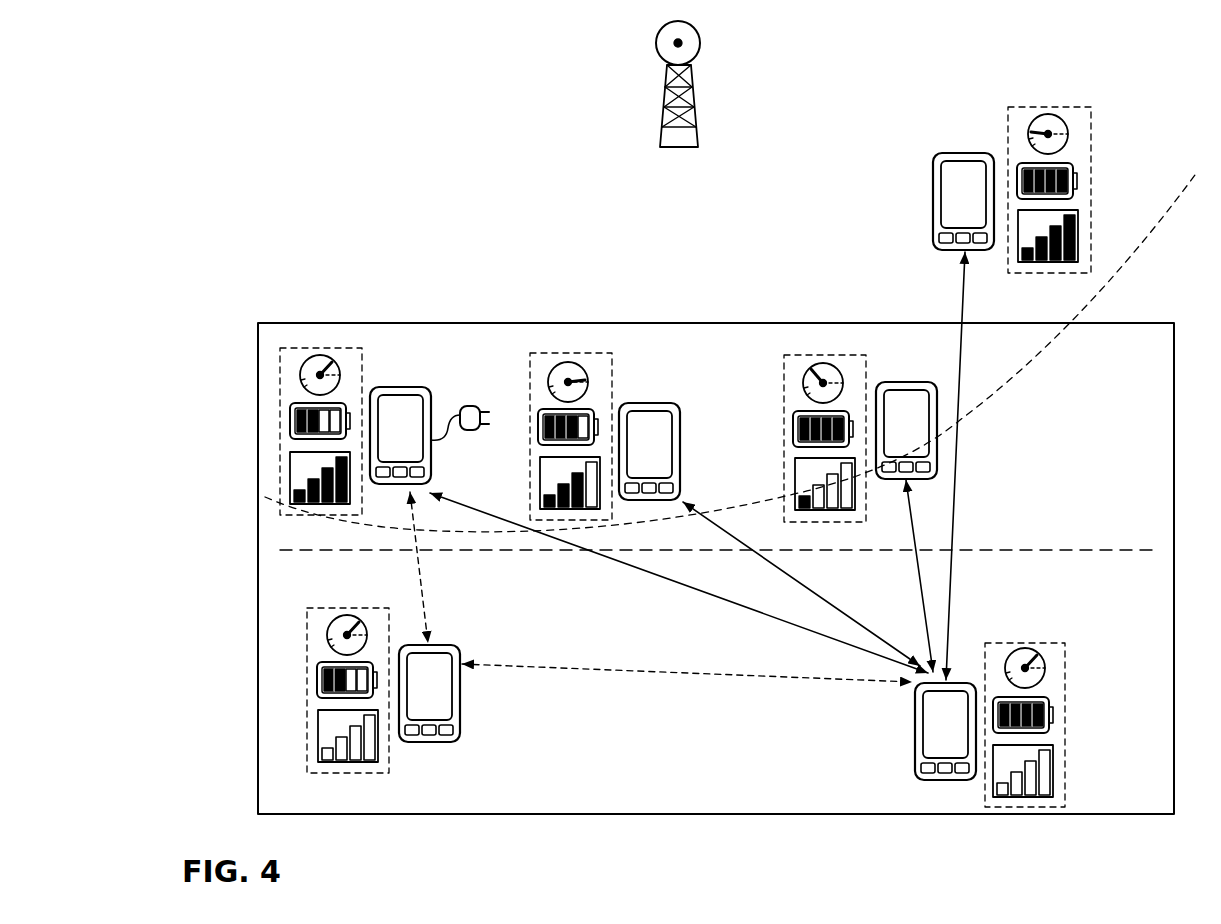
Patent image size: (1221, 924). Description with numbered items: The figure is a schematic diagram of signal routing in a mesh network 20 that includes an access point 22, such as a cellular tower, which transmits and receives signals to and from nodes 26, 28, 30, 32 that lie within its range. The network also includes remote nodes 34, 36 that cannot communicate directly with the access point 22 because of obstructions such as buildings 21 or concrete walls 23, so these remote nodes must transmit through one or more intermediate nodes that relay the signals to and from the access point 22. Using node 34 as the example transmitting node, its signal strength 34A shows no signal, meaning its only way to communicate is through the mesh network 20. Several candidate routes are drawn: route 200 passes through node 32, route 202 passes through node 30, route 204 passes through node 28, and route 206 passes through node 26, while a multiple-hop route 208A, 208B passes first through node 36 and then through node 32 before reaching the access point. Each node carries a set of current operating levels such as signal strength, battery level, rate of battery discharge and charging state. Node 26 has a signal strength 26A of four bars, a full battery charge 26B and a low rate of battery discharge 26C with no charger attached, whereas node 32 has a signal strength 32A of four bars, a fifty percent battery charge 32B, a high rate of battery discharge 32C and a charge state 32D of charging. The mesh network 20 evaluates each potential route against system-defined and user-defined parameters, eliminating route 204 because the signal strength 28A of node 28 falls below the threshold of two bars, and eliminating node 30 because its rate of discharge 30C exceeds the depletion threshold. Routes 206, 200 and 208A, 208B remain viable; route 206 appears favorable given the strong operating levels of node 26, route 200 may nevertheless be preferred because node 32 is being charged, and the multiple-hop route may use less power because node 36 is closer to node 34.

The mesh network 20 is at (450, 180).
The buildings 21 is at (467, 815).
The access point 22 is at (660, 135).
The concrete walls 23 is at (1028, 550).
The node 26 is at (955, 155).
The signal strength 26A is at (1064, 265).
The battery charge 26B is at (1080, 172).
The rate of battery discharge 26C is at (1064, 128).
The node 28 is at (898, 384).
The signal strength 28A is at (795, 487).
The node 30 is at (660, 403).
The rate of discharge 30C is at (563, 365).
The node 32 is at (430, 387).
The signal strength 32A is at (290, 486).
The battery charge 32B is at (290, 422).
The rate of battery discharge 32C is at (318, 366).
The charge state 32D is at (470, 405).
The remote node 34 is at (916, 740).
The signal strength 34A is at (1060, 783).
The remote node 36 is at (458, 742).
The route 200 is at (668, 582).
The route 202 is at (780, 578).
The route 204 is at (932, 596).
The route 206 is at (954, 492).
The route 208A is at (655, 672).
The route 208B is at (430, 597).